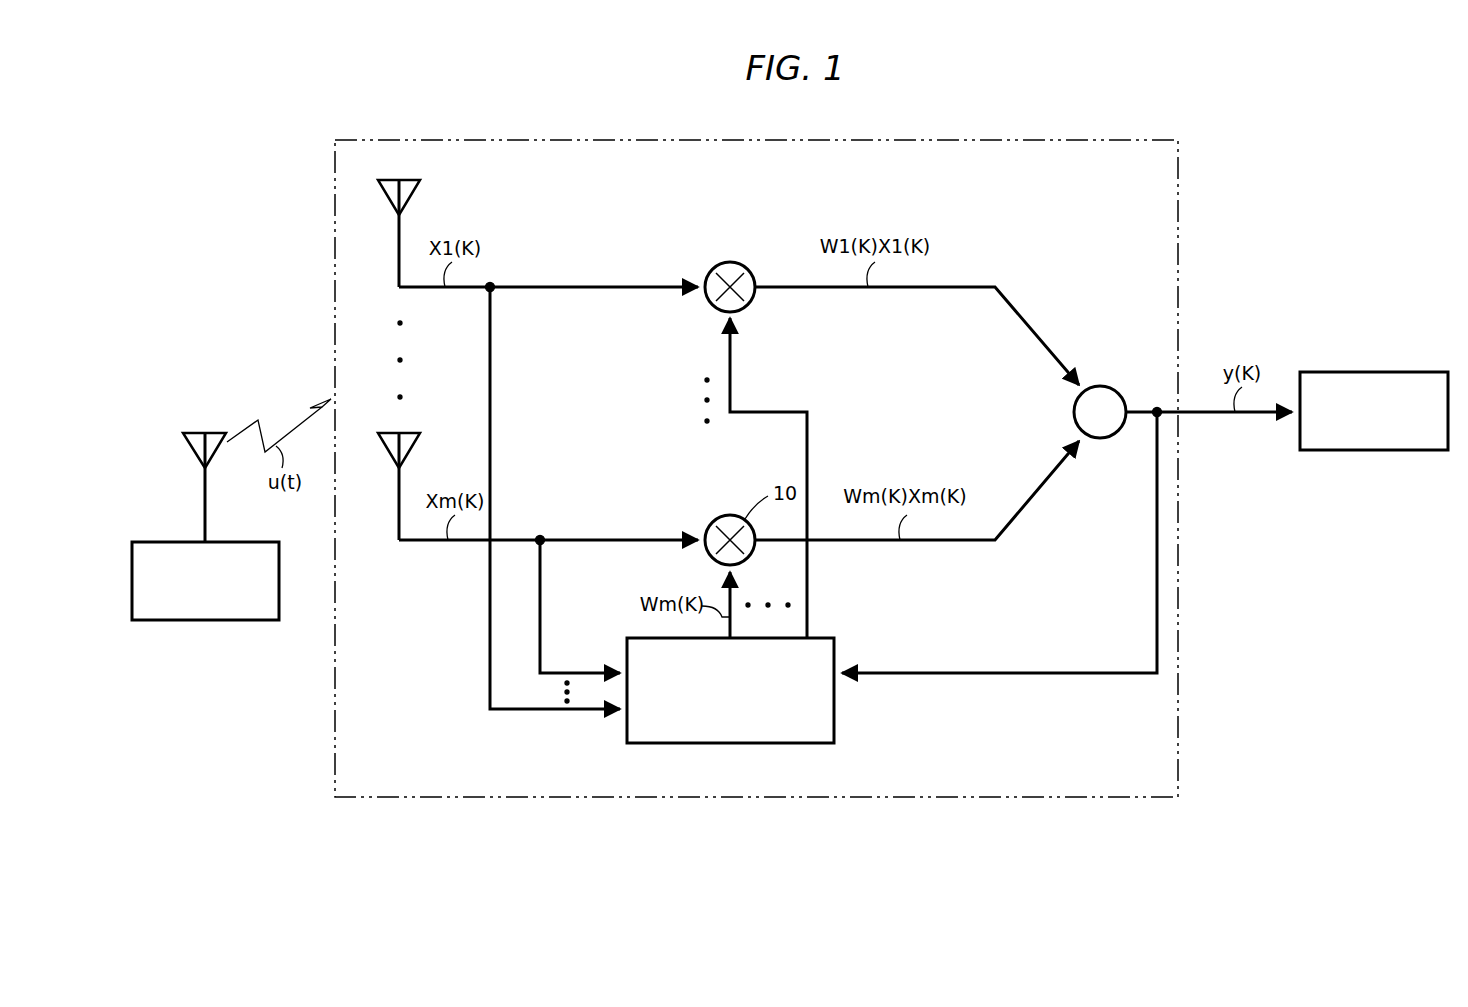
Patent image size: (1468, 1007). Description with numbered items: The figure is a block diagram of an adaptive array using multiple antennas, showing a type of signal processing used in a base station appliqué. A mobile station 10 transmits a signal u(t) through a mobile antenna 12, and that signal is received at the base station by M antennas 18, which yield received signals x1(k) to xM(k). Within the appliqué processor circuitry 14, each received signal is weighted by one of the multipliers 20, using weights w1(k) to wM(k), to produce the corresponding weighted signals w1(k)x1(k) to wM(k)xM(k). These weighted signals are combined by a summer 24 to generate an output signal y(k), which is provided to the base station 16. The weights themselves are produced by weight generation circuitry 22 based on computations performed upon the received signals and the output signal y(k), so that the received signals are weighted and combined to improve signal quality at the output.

The mobile station 10 is at (212, 620).
The mobile antenna 12 is at (197, 433).
The appliqué processor circuitry 14 is at (708, 797).
The base station 16 is at (1368, 372).
The antennas 18 is at (416, 193).
The multipliers 20 is at (745, 266).
The weight generation circuitry 22 is at (836, 728).
The summer 24 is at (1097, 438).